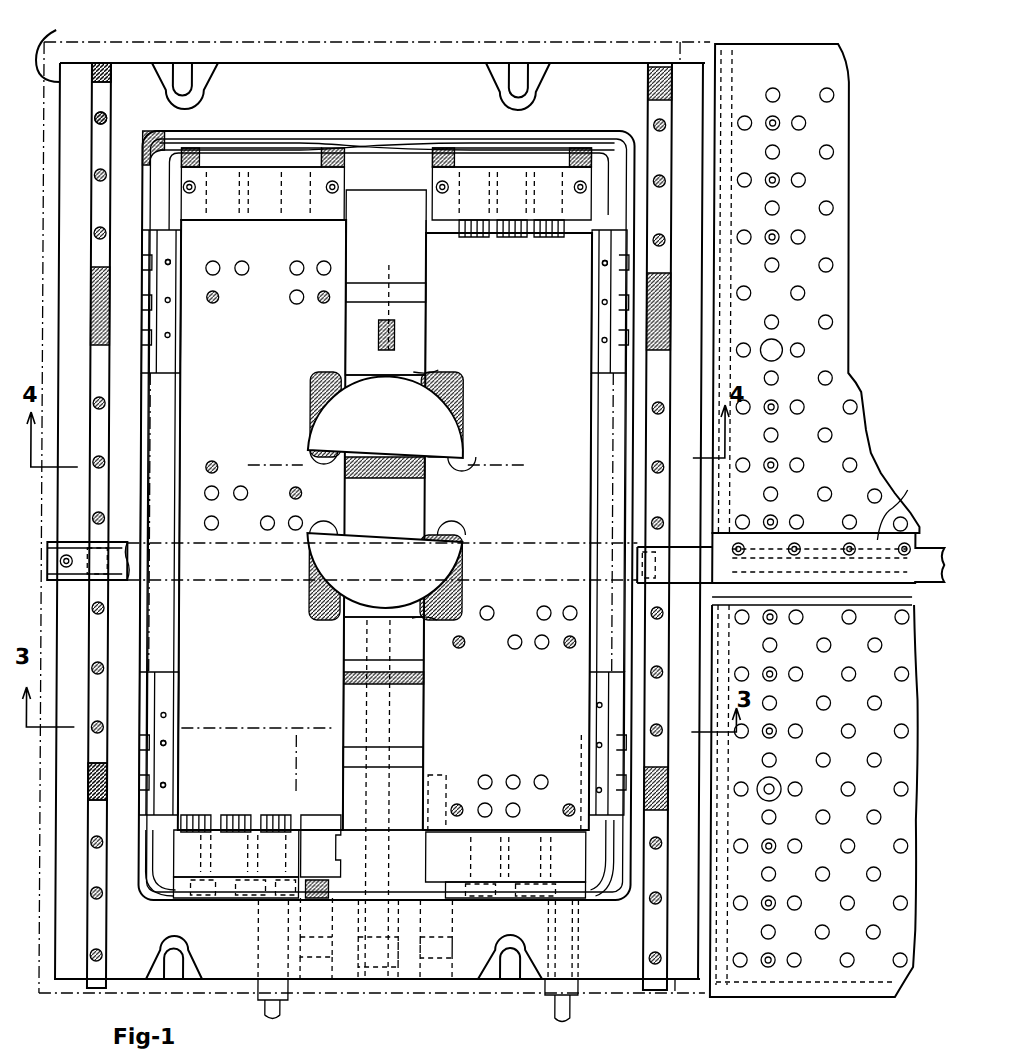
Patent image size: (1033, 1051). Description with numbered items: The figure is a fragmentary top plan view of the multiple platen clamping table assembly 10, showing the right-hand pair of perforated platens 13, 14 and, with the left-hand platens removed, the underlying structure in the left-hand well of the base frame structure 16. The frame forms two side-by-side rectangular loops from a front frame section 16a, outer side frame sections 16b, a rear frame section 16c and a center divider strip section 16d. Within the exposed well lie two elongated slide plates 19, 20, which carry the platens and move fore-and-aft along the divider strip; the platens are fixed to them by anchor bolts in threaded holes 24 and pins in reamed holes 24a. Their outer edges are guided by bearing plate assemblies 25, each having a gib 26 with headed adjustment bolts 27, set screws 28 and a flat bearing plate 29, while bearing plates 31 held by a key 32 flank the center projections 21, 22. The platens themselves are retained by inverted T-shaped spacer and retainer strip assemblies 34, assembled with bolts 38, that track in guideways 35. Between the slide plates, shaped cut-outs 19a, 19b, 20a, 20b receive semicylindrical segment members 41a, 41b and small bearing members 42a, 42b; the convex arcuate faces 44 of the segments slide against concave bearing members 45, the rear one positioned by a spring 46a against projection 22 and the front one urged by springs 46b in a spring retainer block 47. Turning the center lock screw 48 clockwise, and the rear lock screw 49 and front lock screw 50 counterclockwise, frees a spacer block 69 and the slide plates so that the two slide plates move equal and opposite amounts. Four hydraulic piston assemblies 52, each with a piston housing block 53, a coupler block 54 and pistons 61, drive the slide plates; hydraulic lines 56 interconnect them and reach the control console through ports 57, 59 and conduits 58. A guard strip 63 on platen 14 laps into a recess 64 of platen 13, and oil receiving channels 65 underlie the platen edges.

The multiple platen clamping table assembly 10 is at (868, 147).
The platen 13 is at (830, 997).
The platen 14 is at (838, 62).
The base frame structure 16 is at (437, 53).
The front frame section 16a is at (480, 979).
The outer side frame section 16b is at (44, 42).
The rear frame section 16c is at (335, 62).
The center divider strip section 16d is at (682, 48).
The slide plate 19 is at (507, 531).
The shaped cut-out 19a is at (465, 400).
The shaped cut-out 19b is at (470, 580).
The slide plate 20 is at (262, 525).
The shaped cut-out 20a is at (310, 395).
The shaped cut-out 20b is at (310, 605).
The center projection 21 is at (430, 755).
The center projection 22 is at (428, 316).
The threaded hole 24 is at (214, 304).
The reamed hole 24a is at (292, 272).
The bearing plate assembly 25 is at (583, 355).
The gib 26 is at (590, 252).
The headed adjustment bolt 27 is at (143, 335).
The set screw 28 is at (170, 778).
The bearing plate 29 is at (183, 252).
The bearing plate 31 is at (345, 242).
The key 32 is at (428, 290).
The spacer and retainer strip assembly 34 is at (113, 94).
The guideway 35 is at (104, 70).
The bolt 38 is at (108, 118).
The semicylindrical segment member 41a is at (386, 417).
The semicylindrical segment member 41b is at (384, 570).
The semicylindrical bearing member 42a is at (355, 472).
The semicylindrical bearing member 42b is at (325, 530).
The convex arcuate face 44 is at (438, 370).
The bearing member 45 is at (345, 372).
The spring 46a is at (388, 300).
The spring 46b is at (420, 680).
The spring retainer block 47 is at (345, 660).
The center lock screw 48 is at (383, 967).
The rear lock screw 49 is at (325, 979).
The front lock screw 50 is at (441, 979).
The hydraulic piston assembly 52 is at (381, 517).
The piston housing block 53 is at (218, 178).
The hydraulic line coupler block 54 is at (320, 152).
The hydraulic line 56 is at (282, 131).
The hydraulic line connection port 57 is at (583, 990).
The hydraulic fluid conduit 58 is at (285, 1012).
The hydraulic line port 59 is at (262, 1000).
The piston 61 is at (548, 234).
The guard strip 63 is at (828, 524).
The recess 64 is at (912, 600).
The oil receiving channel 65 is at (130, 565).
The spacer block 69 is at (320, 886).